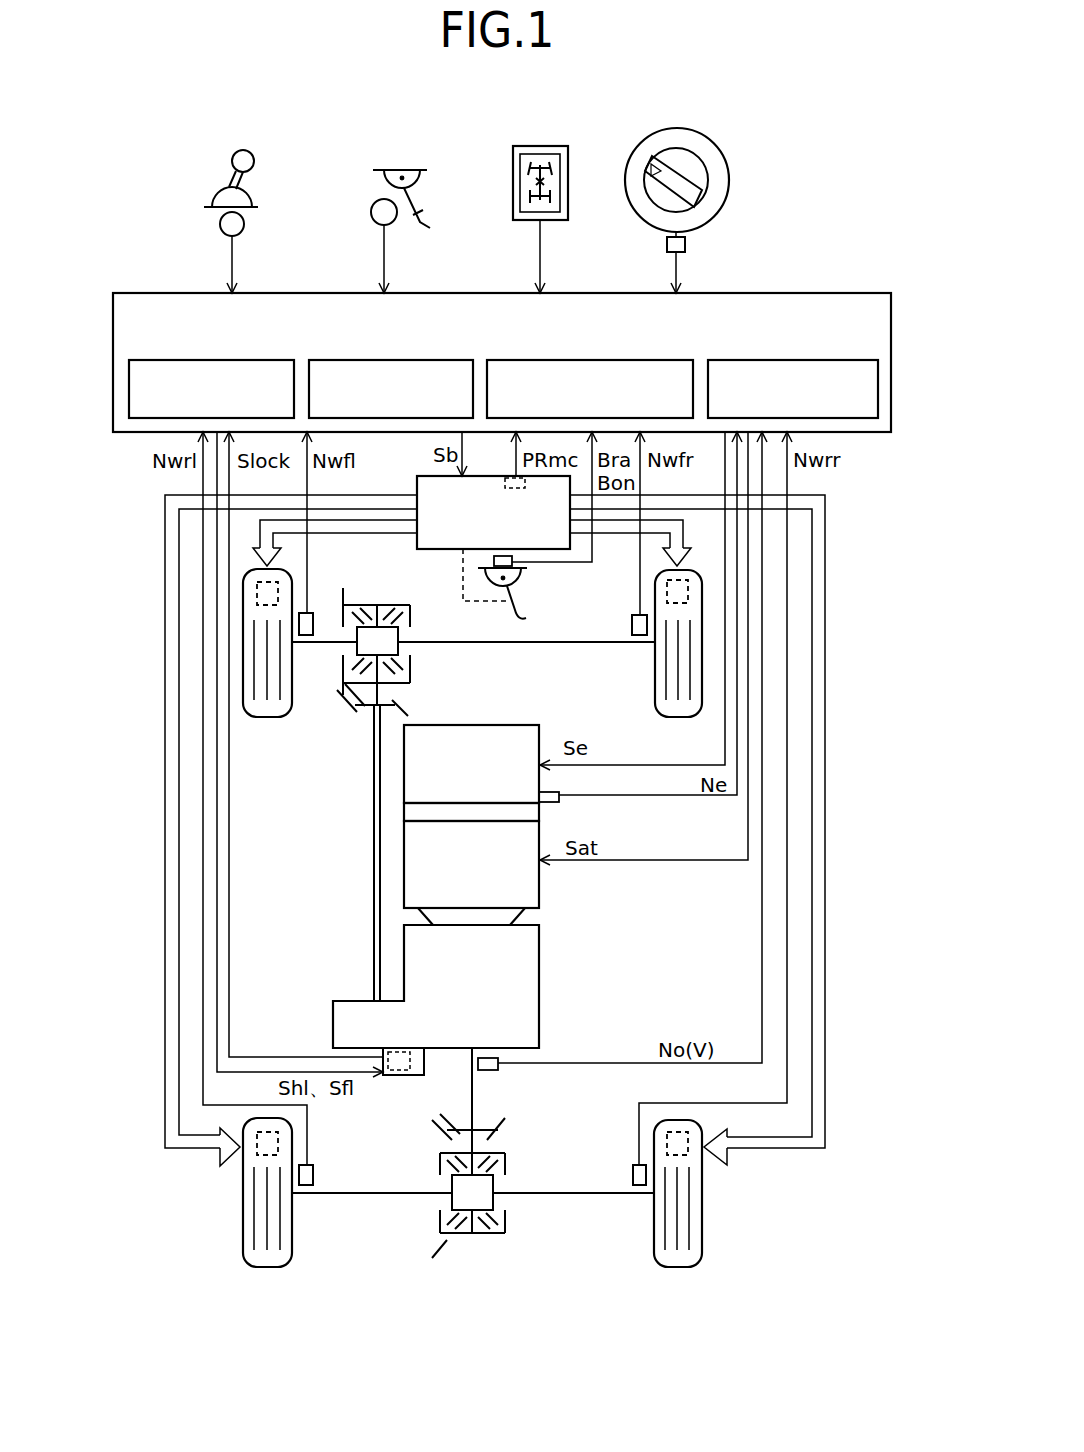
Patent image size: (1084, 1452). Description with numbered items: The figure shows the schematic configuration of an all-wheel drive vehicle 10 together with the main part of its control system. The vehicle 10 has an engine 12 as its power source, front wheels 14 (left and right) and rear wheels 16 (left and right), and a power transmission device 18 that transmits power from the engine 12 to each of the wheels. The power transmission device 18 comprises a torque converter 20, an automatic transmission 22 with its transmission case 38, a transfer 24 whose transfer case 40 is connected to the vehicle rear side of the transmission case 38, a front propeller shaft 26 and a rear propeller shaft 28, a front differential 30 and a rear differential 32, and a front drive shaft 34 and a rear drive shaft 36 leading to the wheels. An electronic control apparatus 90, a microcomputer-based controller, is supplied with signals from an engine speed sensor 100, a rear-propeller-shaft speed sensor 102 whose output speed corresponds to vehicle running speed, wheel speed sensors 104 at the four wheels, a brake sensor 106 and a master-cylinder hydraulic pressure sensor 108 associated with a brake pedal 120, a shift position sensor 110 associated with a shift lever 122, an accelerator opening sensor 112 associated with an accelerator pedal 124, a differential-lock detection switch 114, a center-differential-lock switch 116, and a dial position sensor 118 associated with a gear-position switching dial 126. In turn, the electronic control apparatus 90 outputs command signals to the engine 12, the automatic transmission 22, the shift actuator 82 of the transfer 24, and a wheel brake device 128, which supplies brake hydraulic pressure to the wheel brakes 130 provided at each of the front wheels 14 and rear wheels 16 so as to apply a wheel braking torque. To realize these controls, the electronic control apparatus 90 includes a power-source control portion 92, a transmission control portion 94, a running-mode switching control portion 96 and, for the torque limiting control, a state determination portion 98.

The vehicle 10 is at (774, 110).
The engine 12 is at (540, 742).
The front wheels 14 is at (262, 718).
The rear wheels 16 is at (246, 1235).
The power transmission device 18 is at (446, 1308).
The torque converter 20 is at (527, 812).
The automatic transmission 22 is at (535, 905).
The transfer 24 is at (533, 1035).
The front propeller shaft 26 is at (374, 845).
The rear propeller shaft 28 is at (479, 1104).
The front differential 30 is at (362, 727).
The rear differential 32 is at (478, 1260).
The front drive shaft 34 is at (313, 647).
The rear drive shaft 36 is at (365, 1196).
The transmission case 38 is at (540, 881).
The transfer case 40 is at (540, 963).
The shift actuator 82 is at (423, 1078).
The electronic control apparatus 90 is at (789, 293).
The power-source control portion 92 is at (233, 360).
The transmission control portion 94 is at (413, 360).
The running-mode switching control portion 96 is at (623, 360).
The state determination portion 98 is at (812, 360).
The engine speed sensor 100 is at (560, 794).
The rear-propeller-shaft speed sensor 102 is at (500, 1070).
The wheel speed sensors 104 is at (312, 610).
The brake sensor 106 is at (478, 556).
The master-cylinder hydraulic pressure sensor 108 is at (498, 477).
The shift position sensor 110 is at (222, 233).
The accelerator opening sensor 112 is at (372, 208).
The differential-lock detection switch 114 is at (398, 1078).
The center-differential-lock switch 116 is at (554, 146).
The dial position sensor 118 is at (685, 245).
The brake pedal 120 is at (535, 605).
The shift lever 122 is at (238, 152).
The accelerator pedal 124 is at (427, 222).
The gear-position switching dial 126 is at (682, 137).
The wheel brake device 128 is at (432, 476).
The wheel brakes 130 is at (290, 572).